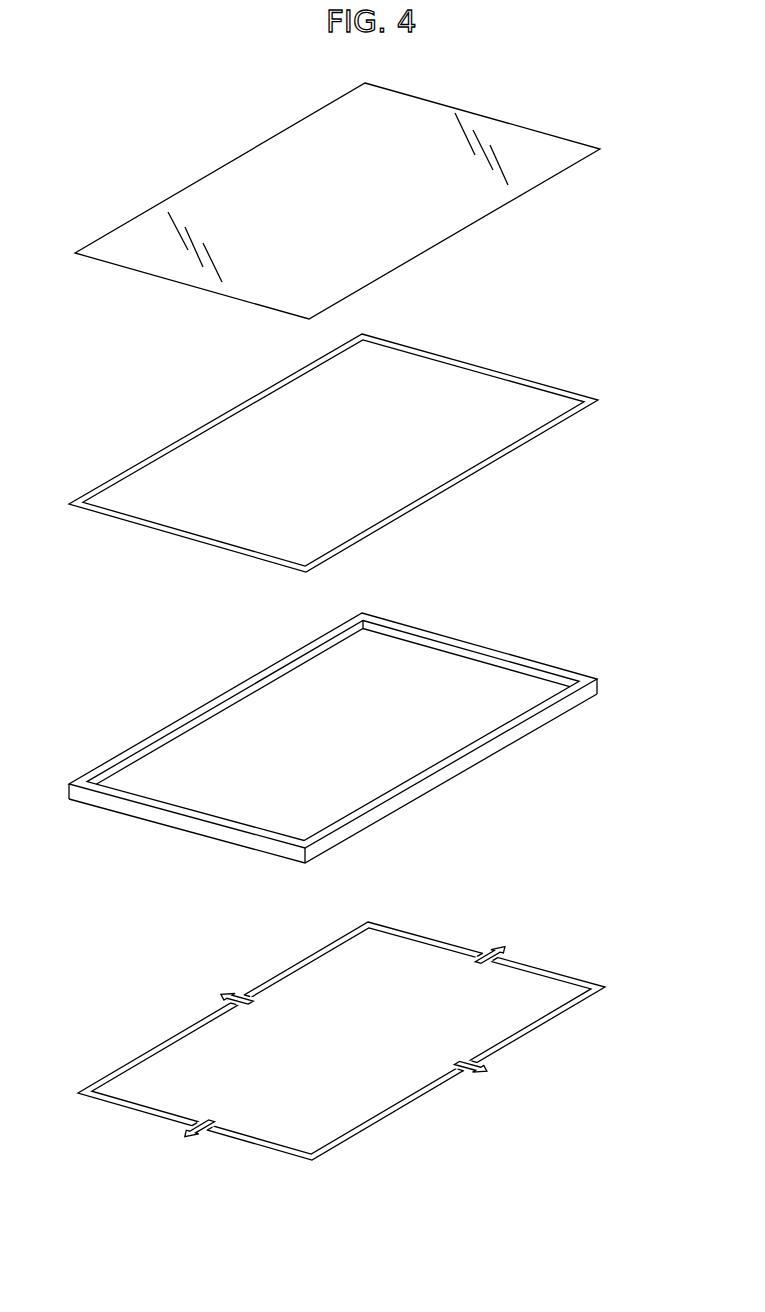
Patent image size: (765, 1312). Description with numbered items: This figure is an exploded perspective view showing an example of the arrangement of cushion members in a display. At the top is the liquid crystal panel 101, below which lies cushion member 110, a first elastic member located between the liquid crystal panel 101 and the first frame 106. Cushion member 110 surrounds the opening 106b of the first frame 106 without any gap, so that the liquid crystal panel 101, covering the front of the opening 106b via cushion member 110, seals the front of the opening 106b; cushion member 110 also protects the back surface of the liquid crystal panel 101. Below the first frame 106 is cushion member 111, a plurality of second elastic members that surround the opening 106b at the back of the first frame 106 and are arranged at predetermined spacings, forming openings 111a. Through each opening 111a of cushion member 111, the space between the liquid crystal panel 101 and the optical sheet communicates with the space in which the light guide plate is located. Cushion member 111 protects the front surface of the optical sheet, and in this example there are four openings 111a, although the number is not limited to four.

The liquid crystal panel 101 is at (532, 177).
The cushion member 110 is at (542, 428).
The first frame 106 is at (338, 738).
The opening 106b is at (225, 700).
The cushion member 111 is at (364, 1058).
The opening 111a is at (258, 1000).